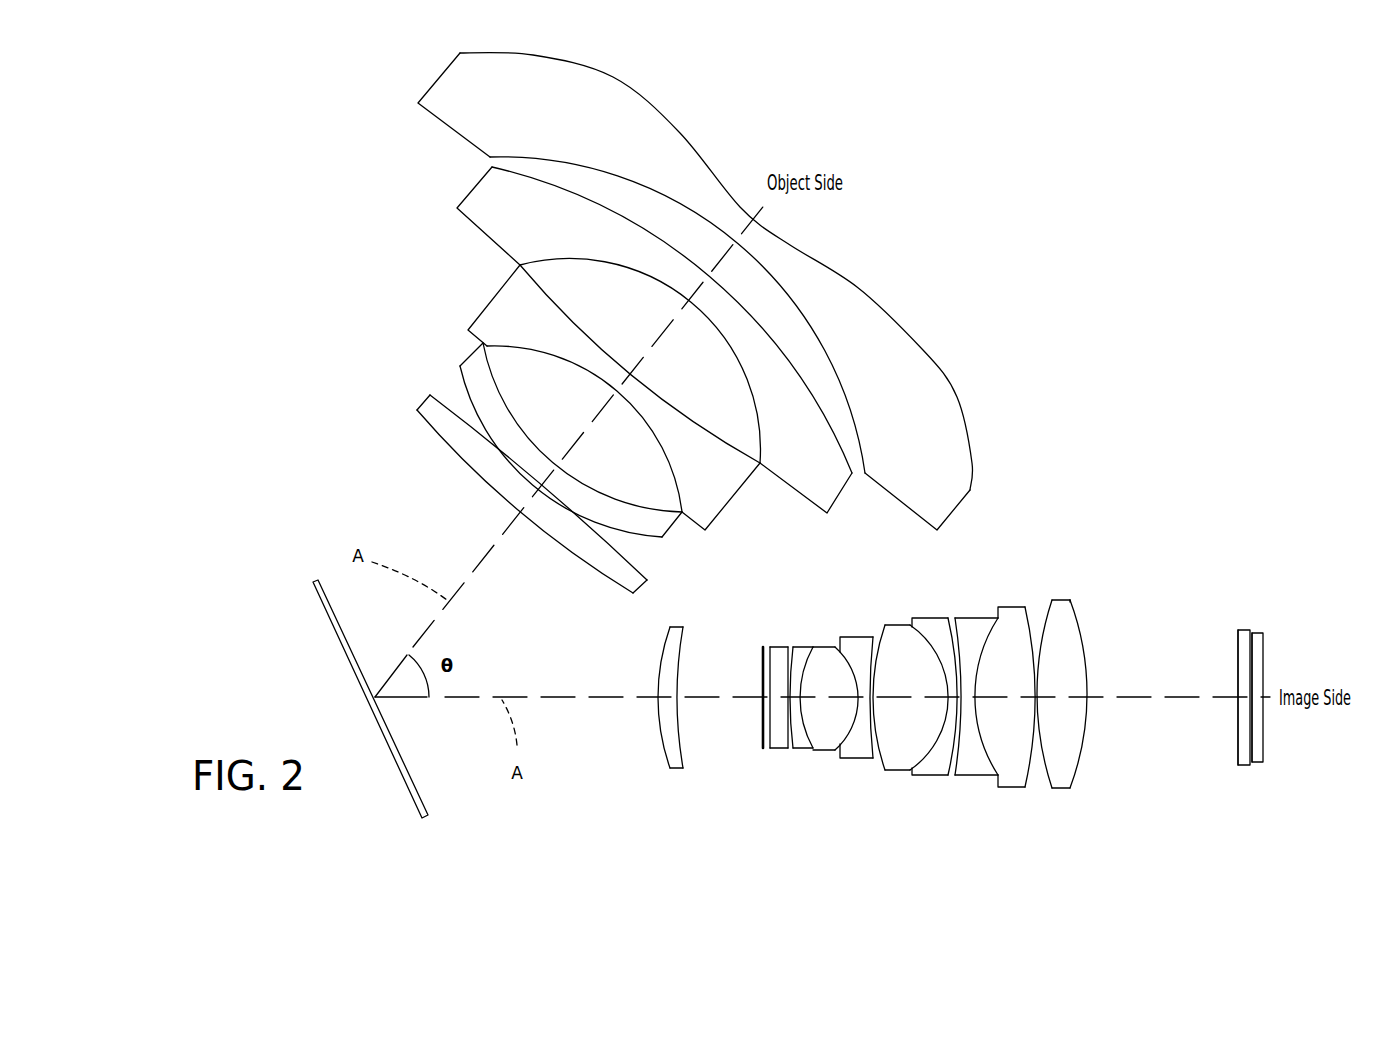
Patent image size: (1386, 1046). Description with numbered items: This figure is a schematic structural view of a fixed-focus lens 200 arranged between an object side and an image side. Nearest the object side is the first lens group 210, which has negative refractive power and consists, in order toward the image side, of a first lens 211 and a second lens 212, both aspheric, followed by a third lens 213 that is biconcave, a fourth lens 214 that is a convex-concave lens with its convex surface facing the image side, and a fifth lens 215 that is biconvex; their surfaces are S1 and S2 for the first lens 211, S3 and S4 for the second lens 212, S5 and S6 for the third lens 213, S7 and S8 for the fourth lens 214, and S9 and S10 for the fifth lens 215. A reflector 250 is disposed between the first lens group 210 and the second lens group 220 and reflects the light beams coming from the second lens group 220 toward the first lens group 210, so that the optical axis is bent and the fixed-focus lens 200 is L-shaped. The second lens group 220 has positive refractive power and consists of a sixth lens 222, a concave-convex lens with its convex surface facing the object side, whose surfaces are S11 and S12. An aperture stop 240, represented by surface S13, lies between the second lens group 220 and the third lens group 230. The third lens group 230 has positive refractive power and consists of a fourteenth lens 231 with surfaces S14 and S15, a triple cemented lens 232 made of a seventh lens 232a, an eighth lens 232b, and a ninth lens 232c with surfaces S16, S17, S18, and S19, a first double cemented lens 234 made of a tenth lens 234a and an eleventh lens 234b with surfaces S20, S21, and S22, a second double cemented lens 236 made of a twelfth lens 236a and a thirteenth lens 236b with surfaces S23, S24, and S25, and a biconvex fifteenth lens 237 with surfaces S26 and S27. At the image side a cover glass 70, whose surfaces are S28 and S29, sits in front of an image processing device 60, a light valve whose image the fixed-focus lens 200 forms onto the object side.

The fixed-focus lens 200 is at (1277, 812).
The first lens group 210 is at (337, 113).
The first lens 211 is at (684, 292).
The second lens 212 is at (613, 352).
The third lens 213 is at (561, 375).
The fourth lens 214 is at (539, 412).
The fifth lens 215 is at (515, 447).
The second lens group 220 is at (643, 684).
The sixth lens 222 is at (643, 684).
The third lens group 230 is at (750, 850).
The fourteenth lens 231 is at (750, 722).
The triple cemented lens 232 is at (775, 813).
The seventh lens 232a is at (795, 693).
The eighth lens 232b is at (825, 707).
The ninth lens 232c is at (852, 693).
The first double cemented lens 234 is at (878, 813).
The tenth lens 234a is at (901, 693).
The eleventh lens 234b is at (930, 693).
The second double cemented lens 236 is at (960, 813).
The twelfth lens 236a is at (963, 684).
The thirteenth lens 236b is at (1002, 684).
The fifteenth lens 237 is at (1048, 690).
The aperture stop 240 is at (763, 723).
The reflector 250 is at (338, 639).
The cover glass 70 is at (1212, 690).
The image processing device 60 is at (1281, 681).
The surface S1 is at (937, 355).
The surface S2 is at (861, 431).
The surface S3 is at (828, 427).
The surface S4 is at (761, 438).
The surface S5 is at (716, 457).
The surface S6 is at (684, 498).
The surface S7 is at (670, 519).
The surface S8 is at (650, 541).
The surface S9 is at (611, 543).
The surface S10 is at (565, 571).
The surface S11 is at (660, 656).
The surface S12 is at (689, 640).
The surface S13 is at (754, 661).
The surface S14 is at (774, 656).
The surface S15 is at (785, 655).
The surface S16 is at (804, 656).
The surface S17 is at (820, 652).
The surface S18 is at (848, 653).
The surface S19 is at (870, 653).
The surface S20 is at (883, 646).
The surface S21 is at (910, 640).
The surface S22 is at (943, 622).
The surface S23 is at (960, 633).
The surface S24 is at (983, 622).
The surface S25 is at (1017, 622).
The surface S26 is at (1038, 621).
The surface S27 is at (1077, 612).
The surface S28 is at (1236, 651).
The surface S29 is at (1253, 631).